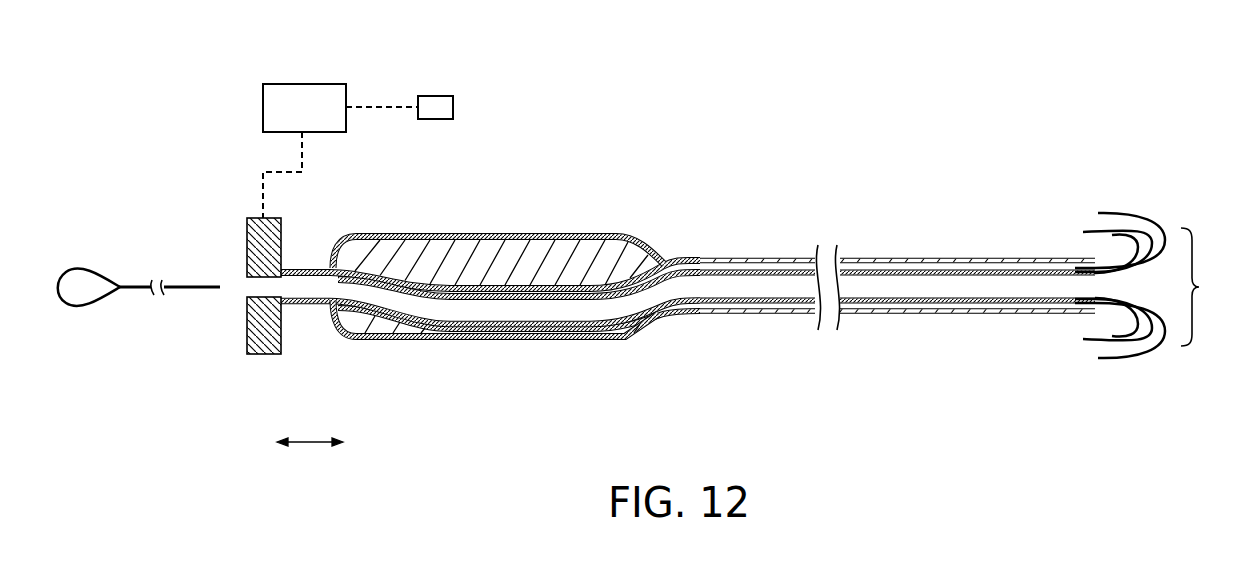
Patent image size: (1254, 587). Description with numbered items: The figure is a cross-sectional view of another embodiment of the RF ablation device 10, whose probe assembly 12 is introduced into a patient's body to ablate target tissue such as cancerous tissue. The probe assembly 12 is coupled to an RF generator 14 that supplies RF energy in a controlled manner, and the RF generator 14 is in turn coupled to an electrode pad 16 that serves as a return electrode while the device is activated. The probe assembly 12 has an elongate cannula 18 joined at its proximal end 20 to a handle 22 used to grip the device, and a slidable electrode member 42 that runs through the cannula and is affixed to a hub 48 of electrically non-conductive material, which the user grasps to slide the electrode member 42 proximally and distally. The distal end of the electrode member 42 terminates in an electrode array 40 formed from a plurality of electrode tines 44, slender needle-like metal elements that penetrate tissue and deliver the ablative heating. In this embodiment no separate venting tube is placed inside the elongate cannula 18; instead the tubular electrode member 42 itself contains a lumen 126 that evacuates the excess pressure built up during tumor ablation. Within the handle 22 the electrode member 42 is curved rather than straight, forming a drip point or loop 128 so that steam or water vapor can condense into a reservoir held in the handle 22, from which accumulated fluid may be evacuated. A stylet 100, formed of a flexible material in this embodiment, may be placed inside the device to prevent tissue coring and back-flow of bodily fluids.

The RF ablation device 10 is at (642, 182).
The probe assembly 12 is at (500, 366).
The RF generator 14 is at (305, 84).
The electrode pad 16 is at (436, 96).
The elongate cannula 18 is at (917, 257).
The proximal end 20 is at (664, 262).
The handle 22 is at (522, 233).
The electrode array 40 is at (1206, 287).
The electrode member 42 is at (938, 304).
The electrode tines 44 is at (1140, 231).
The hub 48 is at (263, 354).
The stylet 100 is at (131, 287).
The lumen 126 is at (757, 287).
The drip point or loop 128 is at (585, 340).